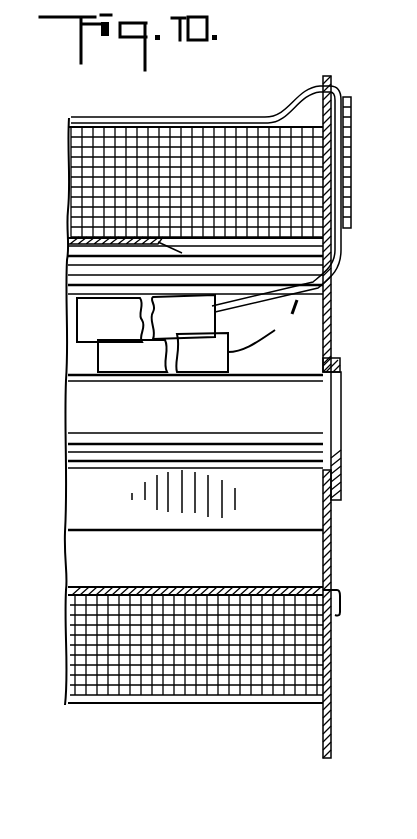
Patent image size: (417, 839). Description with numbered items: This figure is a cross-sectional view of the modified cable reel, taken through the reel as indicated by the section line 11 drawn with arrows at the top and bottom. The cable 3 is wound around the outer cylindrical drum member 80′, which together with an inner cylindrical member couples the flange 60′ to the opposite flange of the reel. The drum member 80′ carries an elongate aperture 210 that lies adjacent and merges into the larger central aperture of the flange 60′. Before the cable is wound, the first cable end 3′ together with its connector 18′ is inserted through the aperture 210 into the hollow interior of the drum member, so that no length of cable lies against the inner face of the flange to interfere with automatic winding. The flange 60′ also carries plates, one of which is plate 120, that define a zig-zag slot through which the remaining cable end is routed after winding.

The cable 3 is at (235, 126).
The section line 11 is at (320, 38).
The support bar 120 is at (352, 107).
The outer cylindrical member 80′ is at (67, 243).
The elongate aperture 210 is at (228, 247).
The connector 18′ is at (135, 362).
The first cable end 3′ is at (270, 347).
The flange 60′ is at (331, 670).